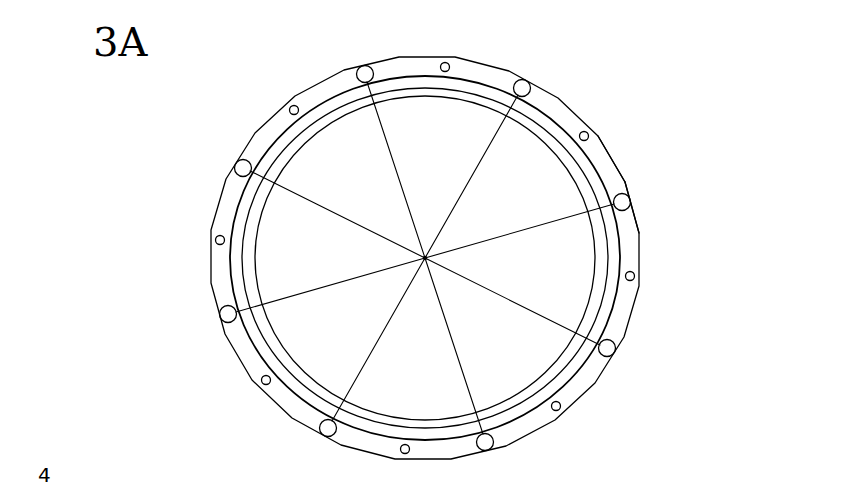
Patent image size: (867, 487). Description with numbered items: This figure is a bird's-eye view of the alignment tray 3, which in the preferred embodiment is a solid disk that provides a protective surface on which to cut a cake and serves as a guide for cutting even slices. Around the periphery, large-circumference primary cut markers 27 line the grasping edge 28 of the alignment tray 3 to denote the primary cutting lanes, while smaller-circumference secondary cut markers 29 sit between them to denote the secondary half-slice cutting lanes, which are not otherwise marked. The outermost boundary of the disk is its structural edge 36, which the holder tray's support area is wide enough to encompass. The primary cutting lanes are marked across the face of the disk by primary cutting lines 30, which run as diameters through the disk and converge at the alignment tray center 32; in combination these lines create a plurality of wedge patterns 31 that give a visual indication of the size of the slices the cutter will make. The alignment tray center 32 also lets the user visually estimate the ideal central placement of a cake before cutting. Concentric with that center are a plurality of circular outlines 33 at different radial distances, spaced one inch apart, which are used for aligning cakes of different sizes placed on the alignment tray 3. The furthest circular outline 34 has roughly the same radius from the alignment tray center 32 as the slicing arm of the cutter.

The alignment tray 3 is at (167, 272).
The primary cut markers 27 is at (240, 160).
The grasping edge 28 is at (625, 225).
The secondary cut markers 29 is at (630, 275).
The primary cutting lines 30 is at (276, 300).
The wedge patterns 31 is at (308, 349).
The alignment tray center 32 is at (425, 258).
The circular outlines 33 is at (557, 413).
The furthest circular outline 34 is at (553, 123).
The structural edge 36 is at (617, 167).